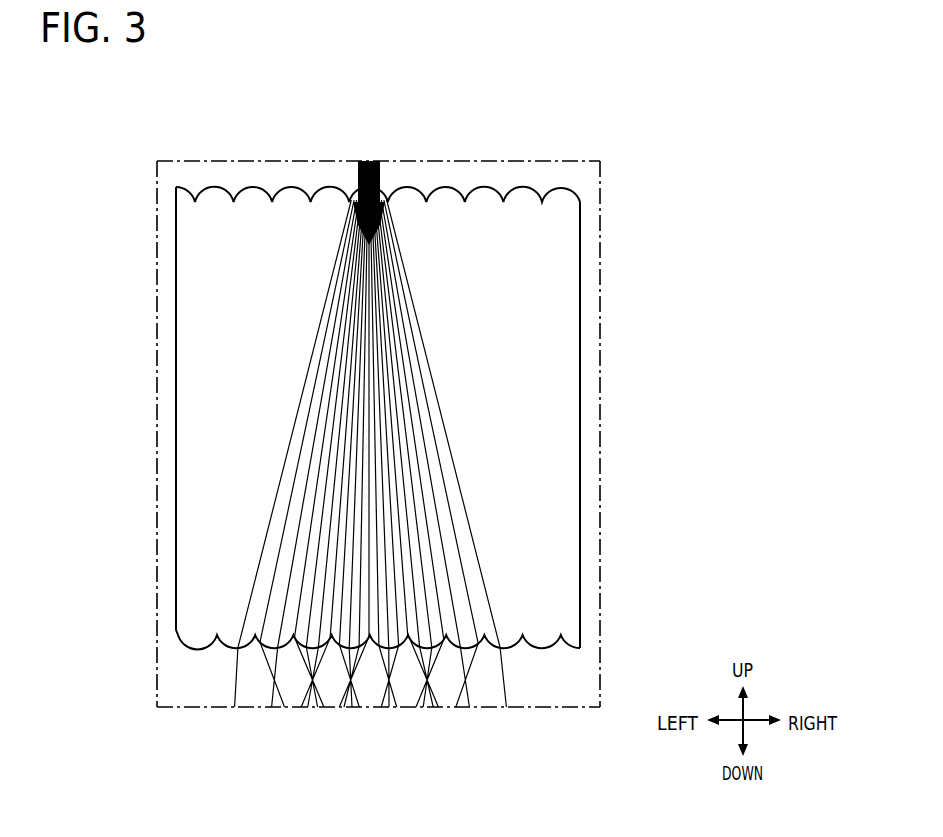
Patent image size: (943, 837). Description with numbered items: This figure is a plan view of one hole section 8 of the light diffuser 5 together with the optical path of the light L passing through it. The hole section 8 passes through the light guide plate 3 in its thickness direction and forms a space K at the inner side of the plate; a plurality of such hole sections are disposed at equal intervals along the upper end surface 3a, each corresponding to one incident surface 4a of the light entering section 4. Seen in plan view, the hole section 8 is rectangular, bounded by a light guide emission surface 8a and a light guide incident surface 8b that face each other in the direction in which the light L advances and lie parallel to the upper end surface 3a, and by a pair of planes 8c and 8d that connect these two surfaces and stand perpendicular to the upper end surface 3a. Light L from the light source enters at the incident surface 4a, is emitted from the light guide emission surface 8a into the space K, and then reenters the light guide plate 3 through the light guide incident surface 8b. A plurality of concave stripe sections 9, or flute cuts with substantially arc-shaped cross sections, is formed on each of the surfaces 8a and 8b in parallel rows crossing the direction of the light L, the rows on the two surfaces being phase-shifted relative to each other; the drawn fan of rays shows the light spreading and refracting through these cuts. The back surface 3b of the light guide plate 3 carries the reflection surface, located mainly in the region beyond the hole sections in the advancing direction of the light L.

The light guide plate 3 is at (140, 428).
The upper end surface 3a is at (208, 160).
The back surface 3b is at (173, 678).
The light entering section 4 is at (392, 164).
The incident surface 4a is at (368, 160).
The light diffuser 5 is at (640, 510).
The hole section 8 is at (582, 260).
The light guide emission surface 8a is at (508, 194).
The light guide incident surface 8b is at (532, 648).
The plane 8c is at (178, 306).
The plane 8d is at (578, 319).
The concave stripe section 9 is at (345, 192).
The light L is at (440, 408).
The space K is at (560, 460).